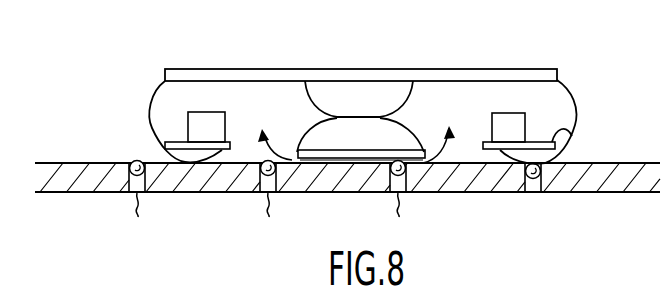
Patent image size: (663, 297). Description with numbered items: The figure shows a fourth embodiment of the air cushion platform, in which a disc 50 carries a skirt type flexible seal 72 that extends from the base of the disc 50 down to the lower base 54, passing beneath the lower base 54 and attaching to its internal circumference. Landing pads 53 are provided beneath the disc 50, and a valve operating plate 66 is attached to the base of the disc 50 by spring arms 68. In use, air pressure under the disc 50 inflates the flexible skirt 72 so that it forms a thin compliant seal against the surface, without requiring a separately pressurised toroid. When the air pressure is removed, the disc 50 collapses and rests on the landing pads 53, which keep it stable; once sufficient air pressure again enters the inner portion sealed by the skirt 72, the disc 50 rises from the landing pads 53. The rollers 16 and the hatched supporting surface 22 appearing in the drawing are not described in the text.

The roller 16 is at (131, 163).
The rail / guideway 22 is at (533, 193).
The disc 50 is at (513, 68).
The landing pad 53 is at (497, 118).
The lower base 54 is at (574, 118).
The valve operating plate 66 is at (298, 152).
The spring arms 68 is at (402, 98).
The flexible skirt type seal 72 is at (573, 137).